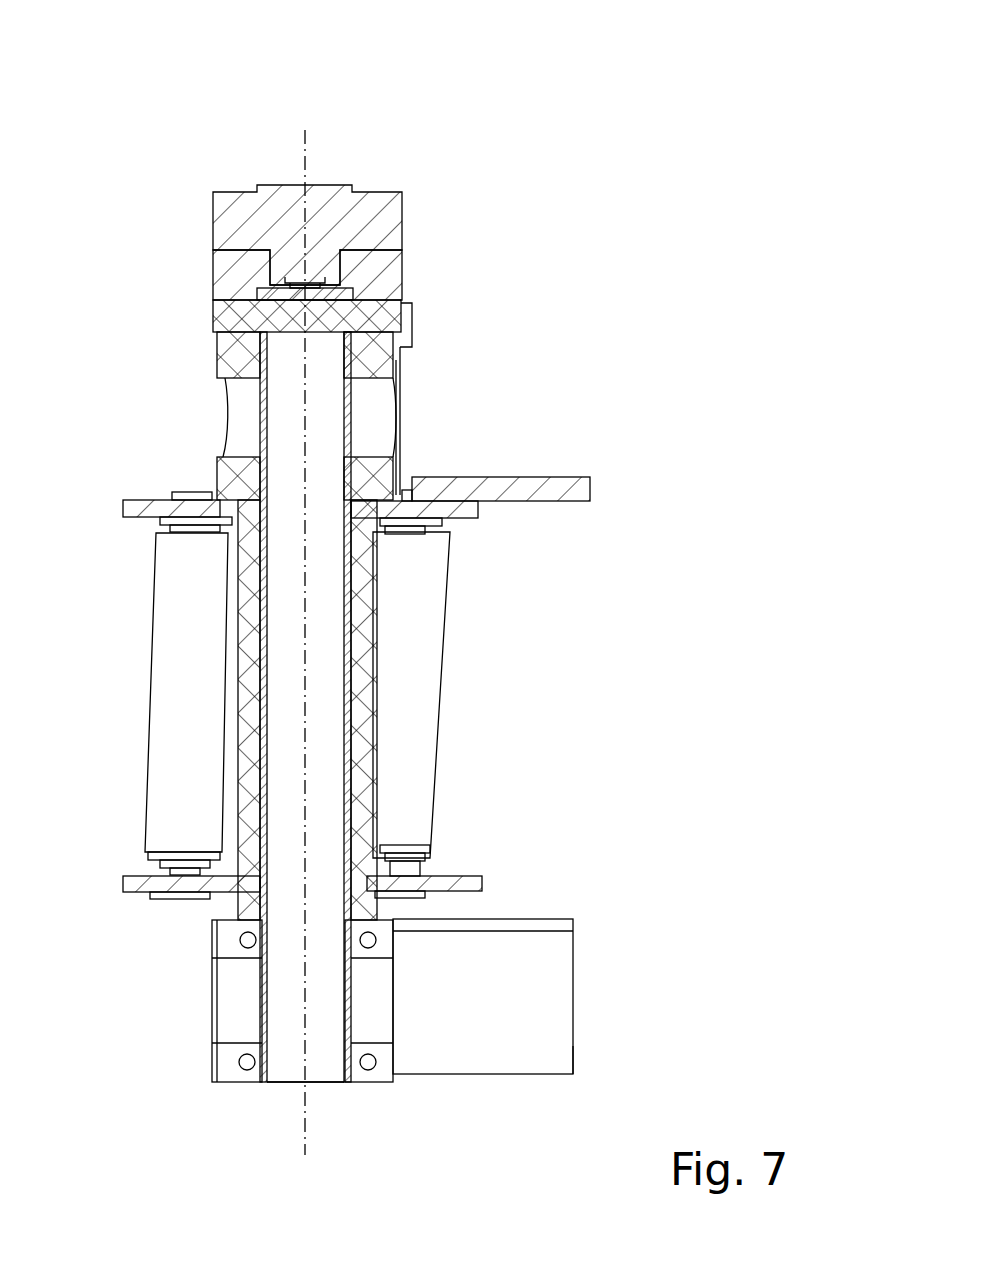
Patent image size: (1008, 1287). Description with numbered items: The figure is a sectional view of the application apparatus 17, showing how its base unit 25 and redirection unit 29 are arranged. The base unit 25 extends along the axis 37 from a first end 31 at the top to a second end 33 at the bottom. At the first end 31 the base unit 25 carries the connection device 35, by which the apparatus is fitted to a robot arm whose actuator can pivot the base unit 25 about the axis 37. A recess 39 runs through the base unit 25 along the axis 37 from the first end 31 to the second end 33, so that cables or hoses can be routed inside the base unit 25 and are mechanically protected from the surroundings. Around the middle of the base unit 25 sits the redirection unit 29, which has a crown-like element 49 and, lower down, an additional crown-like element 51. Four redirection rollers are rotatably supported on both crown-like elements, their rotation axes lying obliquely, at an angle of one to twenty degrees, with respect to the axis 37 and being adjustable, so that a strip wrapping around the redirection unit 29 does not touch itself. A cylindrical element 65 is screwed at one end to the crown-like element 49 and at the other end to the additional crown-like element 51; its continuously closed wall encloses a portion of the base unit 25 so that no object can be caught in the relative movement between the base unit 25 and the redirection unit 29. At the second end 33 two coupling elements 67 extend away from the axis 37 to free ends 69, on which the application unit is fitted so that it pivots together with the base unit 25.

The application apparatus 17 is at (762, 486).
The base unit 25 is at (586, 386).
The redirection unit 29 is at (662, 610).
The first end 31 is at (328, 185).
The second end 33 is at (240, 1067).
The connection device 35 is at (385, 272).
The axis 37 is at (303, 137).
The recess 39 is at (325, 1100).
The crown-like element 49 is at (475, 508).
The additional crown-like element 51 is at (473, 884).
The cylindrical element 65 is at (248, 810).
The coupling element 67 is at (548, 955).
The free end 69 is at (573, 1046).